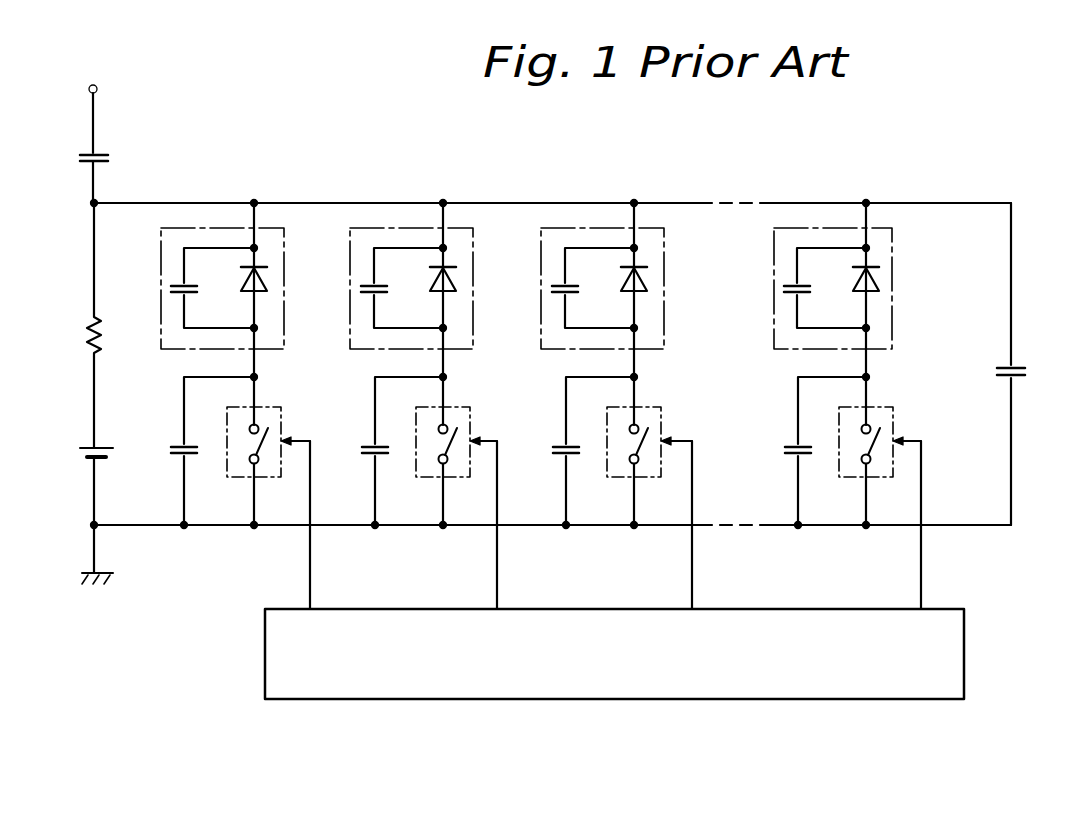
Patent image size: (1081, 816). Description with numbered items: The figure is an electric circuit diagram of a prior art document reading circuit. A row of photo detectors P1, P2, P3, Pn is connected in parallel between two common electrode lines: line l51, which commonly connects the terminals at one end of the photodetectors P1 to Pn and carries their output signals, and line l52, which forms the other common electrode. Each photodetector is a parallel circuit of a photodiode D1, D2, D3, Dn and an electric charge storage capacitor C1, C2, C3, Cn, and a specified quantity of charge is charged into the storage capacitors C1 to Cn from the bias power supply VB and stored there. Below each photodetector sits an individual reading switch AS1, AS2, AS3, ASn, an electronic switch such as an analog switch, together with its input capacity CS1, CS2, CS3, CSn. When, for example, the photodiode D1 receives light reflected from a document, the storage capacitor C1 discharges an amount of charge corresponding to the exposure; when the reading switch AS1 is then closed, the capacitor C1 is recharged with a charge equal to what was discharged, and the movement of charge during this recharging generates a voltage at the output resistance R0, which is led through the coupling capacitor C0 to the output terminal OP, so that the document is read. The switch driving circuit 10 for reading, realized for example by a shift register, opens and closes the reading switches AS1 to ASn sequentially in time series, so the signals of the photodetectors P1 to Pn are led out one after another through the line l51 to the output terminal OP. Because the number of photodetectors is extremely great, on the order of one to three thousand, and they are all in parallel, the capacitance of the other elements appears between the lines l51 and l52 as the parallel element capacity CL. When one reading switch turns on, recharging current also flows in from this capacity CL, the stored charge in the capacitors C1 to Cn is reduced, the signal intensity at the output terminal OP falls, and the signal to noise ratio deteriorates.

The output terminal OP is at (97, 88).
The coupling capacitor C0 is at (108, 157).
The line l51 is at (190, 203).
The line l52 is at (157, 527).
The output resistance R0 is at (88, 337).
The bias power supply VB is at (84, 446).
The parallel element capacity CL is at (1018, 368).
The switch driving circuit for reading 10 is at (964, 648).
The photo detector P1 is at (272, 232).
The photo detector P2 is at (393, 232).
The photo detector P3 is at (584, 232).
The photo detector Pn is at (812, 232).
The electric charge storage capacitor C1 is at (178, 285).
The electric charge storage capacitor C2 is at (368, 285).
The electric charge storage capacitor C3 is at (559, 285).
The electric charge storage capacitor Cn is at (790, 285).
The photodiode D1 is at (268, 279).
The photodiode D2 is at (457, 279).
The photodiode D3 is at (648, 279).
The photodiode Dn is at (880, 282).
The input capacity CS1 is at (177, 452).
The input capacity CS2 is at (368, 452).
The input capacity CS3 is at (559, 452).
The input capacity CSn is at (790, 452).
The individual reading switch AS1 is at (283, 418).
The individual reading switch AS2 is at (472, 418).
The individual reading switch AS3 is at (663, 418).
The individual reading switch ASn is at (895, 418).